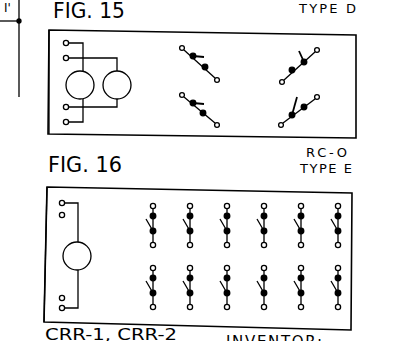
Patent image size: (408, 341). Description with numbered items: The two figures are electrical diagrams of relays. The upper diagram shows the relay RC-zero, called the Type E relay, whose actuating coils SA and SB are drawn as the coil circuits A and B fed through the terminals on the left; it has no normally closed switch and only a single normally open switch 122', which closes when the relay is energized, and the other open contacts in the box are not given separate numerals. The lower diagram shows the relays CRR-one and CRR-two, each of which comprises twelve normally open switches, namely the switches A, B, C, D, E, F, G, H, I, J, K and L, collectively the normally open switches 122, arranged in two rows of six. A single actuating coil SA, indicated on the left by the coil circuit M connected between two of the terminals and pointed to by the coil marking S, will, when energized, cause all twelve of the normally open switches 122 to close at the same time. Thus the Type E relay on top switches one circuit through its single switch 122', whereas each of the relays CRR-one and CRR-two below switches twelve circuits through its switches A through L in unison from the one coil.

In FIG. 16, the normally open switch 122 is at (211, 256).
In FIG. 15, the normally open switch 122' is at (281, 110).
In FIG. 15, the switch/ sensing unit S is at (59, 82).
In FIG. 16, the switch/ sensing unit S is at (55, 252).
In FIG. 15, the normally open switch 122- A is at (80, 85).
In FIG. 16, the normally open switch 122- A is at (148, 225).
In FIG. 15, the normally open switch 122- B is at (117, 85).
In FIG. 16, the normally open switch 122- B is at (185, 225).
In FIG. 16, the normally open switch 122- C is at (222, 225).
In FIG. 16, the normally open switch 122- D is at (259, 225).
In FIG. 16, the normally open switch 122- E is at (296, 225).
In FIG. 16, the normally open switch 122- F is at (333, 225).
In FIG. 16, the normally open switch 122- G is at (148, 287).
In FIG. 16, the normally open switch 122- H is at (185, 287).
In FIG. 16, the normally open switch 122- I is at (223, 287).
In FIG. 16, the normally open switch 122- J is at (258, 287).
In FIG. 16, the normally open switch 122- K is at (296, 287).
In FIG. 16, the normally open switch 122- L is at (333, 287).
In FIG. 16, the ammeter M is at (77, 256).